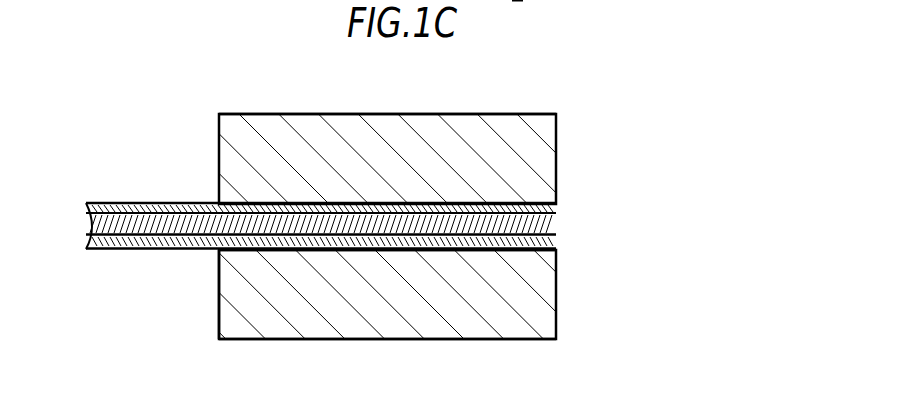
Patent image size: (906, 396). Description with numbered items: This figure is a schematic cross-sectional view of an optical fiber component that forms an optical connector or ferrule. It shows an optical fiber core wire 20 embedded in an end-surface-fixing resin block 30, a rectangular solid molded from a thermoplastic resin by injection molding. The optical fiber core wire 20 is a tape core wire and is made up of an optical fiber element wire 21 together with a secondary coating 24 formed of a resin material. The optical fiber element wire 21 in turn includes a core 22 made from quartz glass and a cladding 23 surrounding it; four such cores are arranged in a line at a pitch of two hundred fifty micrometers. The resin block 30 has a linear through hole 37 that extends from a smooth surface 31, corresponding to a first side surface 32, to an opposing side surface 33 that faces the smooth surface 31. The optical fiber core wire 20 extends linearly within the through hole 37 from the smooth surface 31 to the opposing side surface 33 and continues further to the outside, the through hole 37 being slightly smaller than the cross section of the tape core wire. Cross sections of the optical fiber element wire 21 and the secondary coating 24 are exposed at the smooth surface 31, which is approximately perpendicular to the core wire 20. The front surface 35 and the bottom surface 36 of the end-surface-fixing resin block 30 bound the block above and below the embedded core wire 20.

The optical fiber core wire 20 is at (420, 210).
The optical fiber element wire 21 is at (392, 212).
The core 22 is at (557, 230).
The cladding 23 is at (557, 217).
The secondary coating 24 is at (530, 207).
The end-surface-fixing resin block 30 is at (380, 223).
The smooth surface 31 is at (557, 137).
The first side surface 32 is at (557, 298).
The opposing side surface 33 is at (228, 298).
The front surface 35 is at (355, 114).
The bottom surface 36 is at (330, 339).
The through hole 37 is at (367, 251).